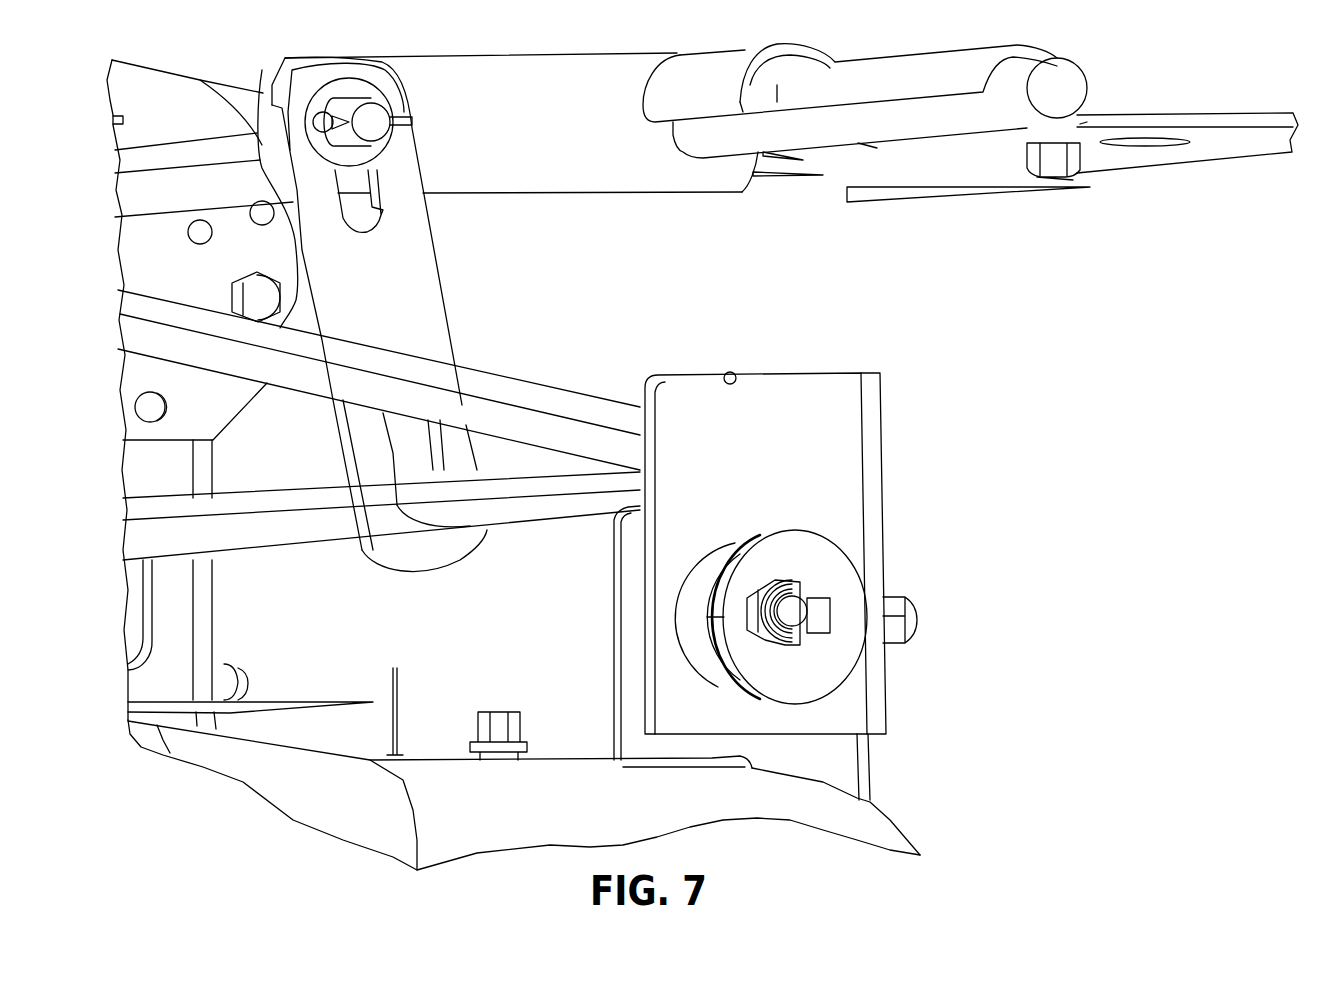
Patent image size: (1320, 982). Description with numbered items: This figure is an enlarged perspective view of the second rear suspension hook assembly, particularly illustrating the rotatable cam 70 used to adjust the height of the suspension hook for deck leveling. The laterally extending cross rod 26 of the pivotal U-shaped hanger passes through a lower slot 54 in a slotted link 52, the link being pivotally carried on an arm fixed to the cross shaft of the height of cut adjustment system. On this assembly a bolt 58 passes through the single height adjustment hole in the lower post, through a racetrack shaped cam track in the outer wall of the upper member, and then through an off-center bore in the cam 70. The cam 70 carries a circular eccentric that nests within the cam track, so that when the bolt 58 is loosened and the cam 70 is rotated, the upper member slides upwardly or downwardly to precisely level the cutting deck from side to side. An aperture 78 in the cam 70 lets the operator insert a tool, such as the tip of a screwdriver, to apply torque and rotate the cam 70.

The cross rod 26 is at (510, 507).
The slotted link 52 is at (390, 297).
The lower slot 54 is at (410, 442).
The bolt 58 is at (790, 620).
The rotatable cam 70 is at (818, 527).
The aperture 78 is at (823, 612).